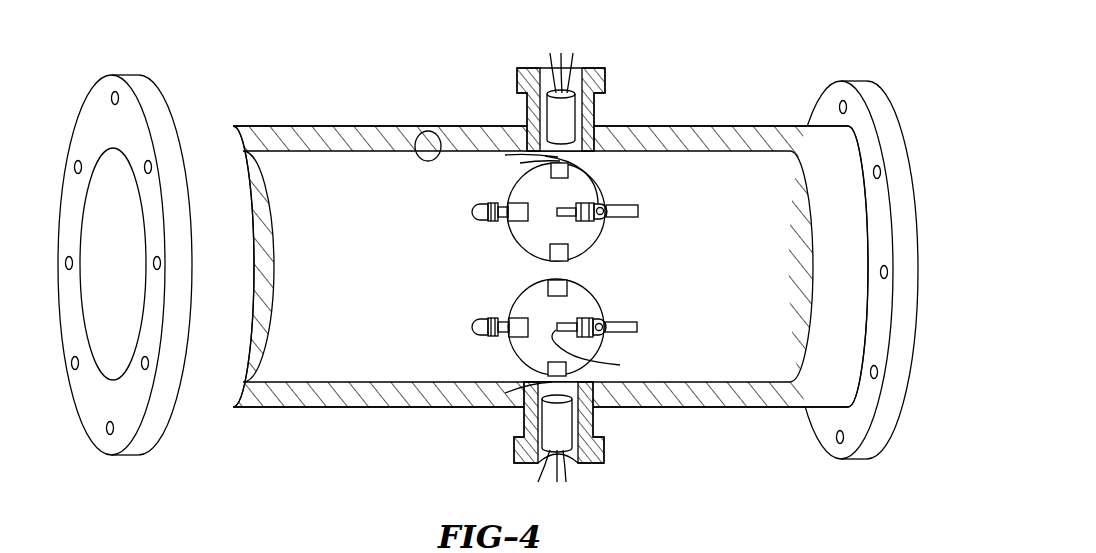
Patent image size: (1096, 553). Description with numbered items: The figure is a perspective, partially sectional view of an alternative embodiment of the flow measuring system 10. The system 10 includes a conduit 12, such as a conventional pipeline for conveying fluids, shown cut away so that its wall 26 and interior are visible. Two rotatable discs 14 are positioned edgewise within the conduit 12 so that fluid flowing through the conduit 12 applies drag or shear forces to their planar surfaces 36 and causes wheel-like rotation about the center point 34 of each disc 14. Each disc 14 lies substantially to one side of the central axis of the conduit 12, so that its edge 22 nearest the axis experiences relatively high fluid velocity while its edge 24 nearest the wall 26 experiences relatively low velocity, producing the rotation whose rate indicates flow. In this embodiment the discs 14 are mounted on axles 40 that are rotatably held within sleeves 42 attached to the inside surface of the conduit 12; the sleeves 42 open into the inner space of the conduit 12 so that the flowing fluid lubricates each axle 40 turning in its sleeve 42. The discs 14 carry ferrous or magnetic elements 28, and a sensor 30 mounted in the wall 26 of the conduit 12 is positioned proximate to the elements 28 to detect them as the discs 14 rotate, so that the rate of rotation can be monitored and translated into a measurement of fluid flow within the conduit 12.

The system 10 is at (488, 238).
The conduit 12 is at (350, 127).
The rotatable discs 14 is at (598, 200).
The edge 22 is at (570, 262).
The edge 24 is at (512, 155).
The wall 26 is at (427, 133).
The ferrous or magnetic elements 28 is at (550, 247).
The sensor 30 is at (577, 73).
The center point 34 is at (598, 195).
The planar surfaces 36 is at (530, 193).
The axles 40 is at (600, 198).
The sleeves 42 is at (607, 199).